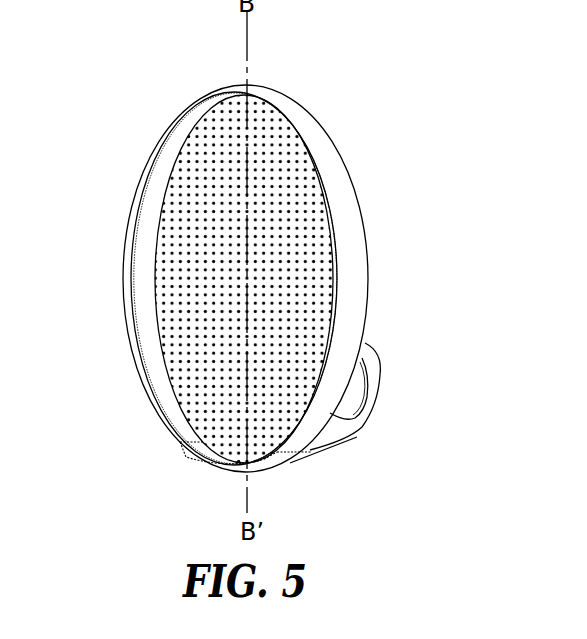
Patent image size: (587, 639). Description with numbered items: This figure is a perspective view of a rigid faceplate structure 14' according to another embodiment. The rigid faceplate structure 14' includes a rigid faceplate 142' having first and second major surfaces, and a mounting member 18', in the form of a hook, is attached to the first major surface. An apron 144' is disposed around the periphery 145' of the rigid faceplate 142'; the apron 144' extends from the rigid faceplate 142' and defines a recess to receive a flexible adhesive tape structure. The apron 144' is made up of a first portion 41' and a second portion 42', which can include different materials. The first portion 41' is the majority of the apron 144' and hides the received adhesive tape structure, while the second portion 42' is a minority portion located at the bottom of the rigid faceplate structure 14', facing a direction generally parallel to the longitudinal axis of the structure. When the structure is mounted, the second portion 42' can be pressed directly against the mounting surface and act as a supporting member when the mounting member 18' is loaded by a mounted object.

The rigid faceplate structure 14' is at (286, 273).
The rigid faceplate 142' is at (302, 278).
The apron 144' is at (192, 278).
The periphery 145' is at (270, 63).
The first portion 41' is at (242, 251).
The second portion 42' is at (215, 479).
The mounting member 18' is at (380, 403).